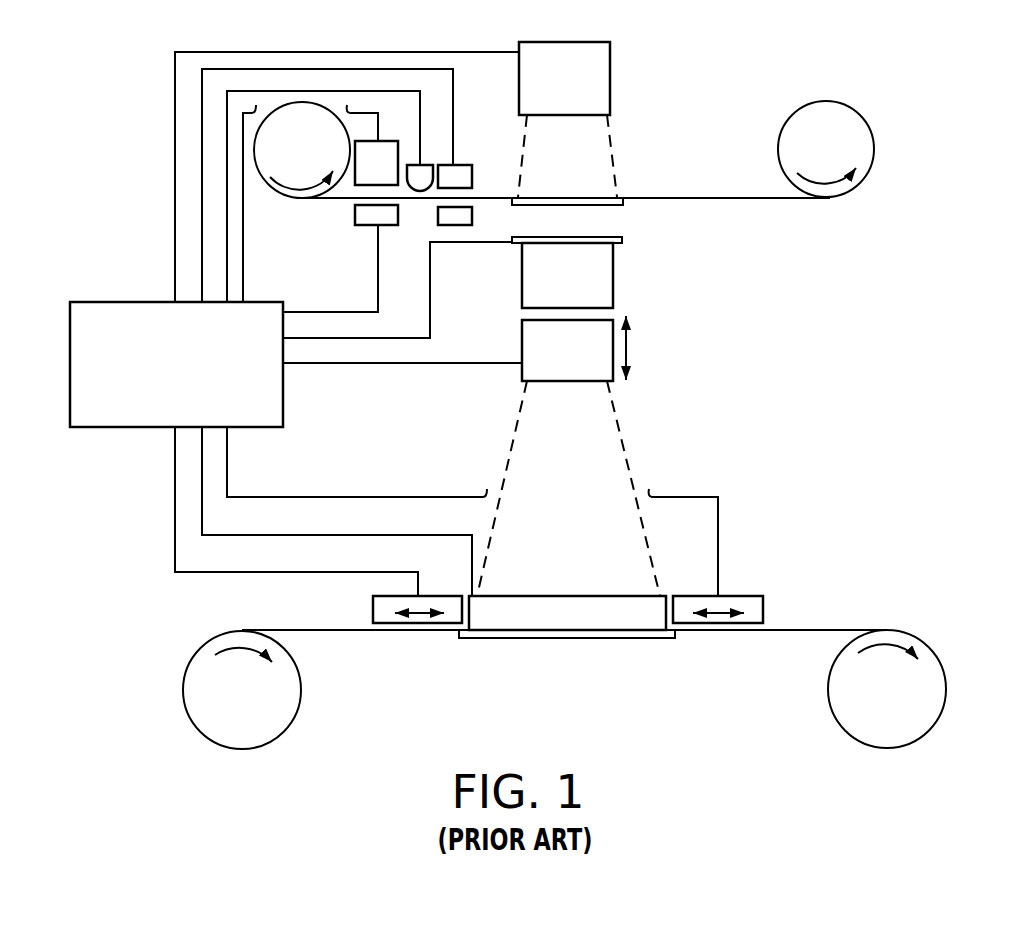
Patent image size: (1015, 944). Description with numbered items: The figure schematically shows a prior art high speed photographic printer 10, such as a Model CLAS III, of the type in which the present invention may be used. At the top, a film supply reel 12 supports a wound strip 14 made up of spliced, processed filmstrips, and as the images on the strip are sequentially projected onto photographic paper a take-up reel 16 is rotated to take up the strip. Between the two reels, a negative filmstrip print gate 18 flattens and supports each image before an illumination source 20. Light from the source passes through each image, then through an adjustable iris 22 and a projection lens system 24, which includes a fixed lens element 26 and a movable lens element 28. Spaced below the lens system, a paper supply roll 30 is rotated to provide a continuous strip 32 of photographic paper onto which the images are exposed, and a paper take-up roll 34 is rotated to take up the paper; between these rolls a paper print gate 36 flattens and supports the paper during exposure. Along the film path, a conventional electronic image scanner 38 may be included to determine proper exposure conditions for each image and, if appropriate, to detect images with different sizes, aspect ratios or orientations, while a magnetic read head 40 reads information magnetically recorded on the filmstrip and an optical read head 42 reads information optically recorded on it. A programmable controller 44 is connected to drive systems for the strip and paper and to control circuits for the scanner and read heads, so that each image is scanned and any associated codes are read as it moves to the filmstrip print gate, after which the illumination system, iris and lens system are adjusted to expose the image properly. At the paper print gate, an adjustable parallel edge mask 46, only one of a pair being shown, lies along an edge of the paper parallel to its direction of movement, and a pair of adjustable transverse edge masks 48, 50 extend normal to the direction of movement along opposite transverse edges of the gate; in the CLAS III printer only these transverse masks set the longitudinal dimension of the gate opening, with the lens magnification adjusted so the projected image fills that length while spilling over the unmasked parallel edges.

The high speed photographic printer 10 is at (702, 351).
The film supply reel 12 is at (252, 150).
The wound strip 14 is at (758, 197).
The take-up reel 16 is at (874, 148).
The negative filmstrip print gate 18 is at (623, 203).
The illumination source 20 is at (610, 78).
The adjustable iris 22 is at (622, 242).
The projection lens system 24 is at (510, 288).
The fixed lens element 26 is at (613, 275).
The movable lens element 28 is at (522, 370).
The paper supply roll 30 is at (300, 686).
The continuous strip of photographic paper 32 is at (323, 631).
The paper take-up roll 34 is at (945, 688).
The paper print gate 36 is at (567, 639).
The electronic image scanner 38 is at (355, 170).
The magnetic read head 40 is at (422, 165).
The optical read head 42 is at (463, 207).
The programmable controller 44 is at (283, 402).
The adjustable parallel edge mask 46 is at (568, 596).
The adjustable transverse edge mask 48 is at (423, 623).
The adjustable transverse edge mask 50 is at (720, 607).